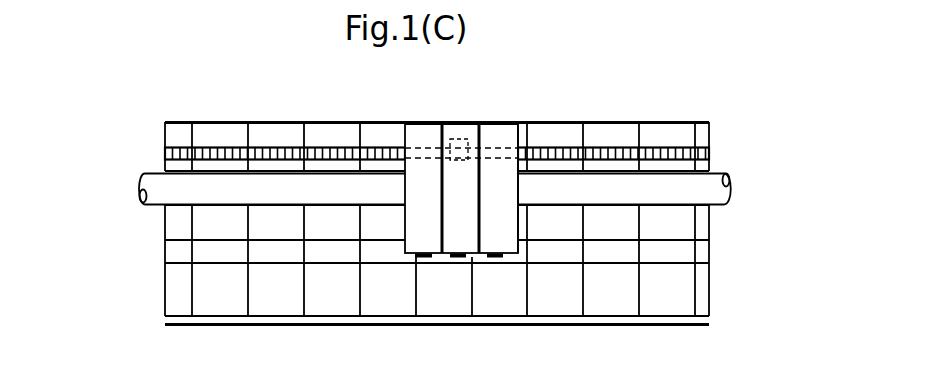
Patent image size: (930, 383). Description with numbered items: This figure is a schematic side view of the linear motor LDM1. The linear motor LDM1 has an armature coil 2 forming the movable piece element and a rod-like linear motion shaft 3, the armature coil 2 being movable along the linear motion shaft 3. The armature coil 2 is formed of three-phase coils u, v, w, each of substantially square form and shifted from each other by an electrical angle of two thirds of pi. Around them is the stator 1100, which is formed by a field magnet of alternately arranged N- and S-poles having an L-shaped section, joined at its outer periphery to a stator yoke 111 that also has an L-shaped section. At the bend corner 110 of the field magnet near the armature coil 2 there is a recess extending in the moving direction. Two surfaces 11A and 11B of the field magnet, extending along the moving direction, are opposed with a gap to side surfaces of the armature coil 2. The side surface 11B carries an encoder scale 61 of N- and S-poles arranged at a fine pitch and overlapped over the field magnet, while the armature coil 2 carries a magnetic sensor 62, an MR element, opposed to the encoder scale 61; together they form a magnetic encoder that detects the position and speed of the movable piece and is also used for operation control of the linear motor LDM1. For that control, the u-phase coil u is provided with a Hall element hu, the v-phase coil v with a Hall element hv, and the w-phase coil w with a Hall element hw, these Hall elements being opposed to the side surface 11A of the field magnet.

The linear motor LDM1 is at (715, 62).
The stator 1100 is at (233, 120).
The side surface of the field magnet 11B is at (177, 135).
The encoder scale 61 is at (620, 145).
The magnetic sensor 62 is at (452, 136).
The armature coil 2 is at (520, 132).
The u-phase coil u is at (423, 128).
The v-phase coil v is at (460, 130).
The w-phase coil w is at (500, 128).
The linear motion shaft 3 is at (713, 170).
The bend corner of the field magnet 110 is at (170, 252).
The side surface of the field magnet 11A is at (267, 265).
The stator yoke 111 is at (623, 320).
The Hall element hu is at (425, 258).
The Hall element hv is at (462, 258).
The Hall element hw is at (497, 258).